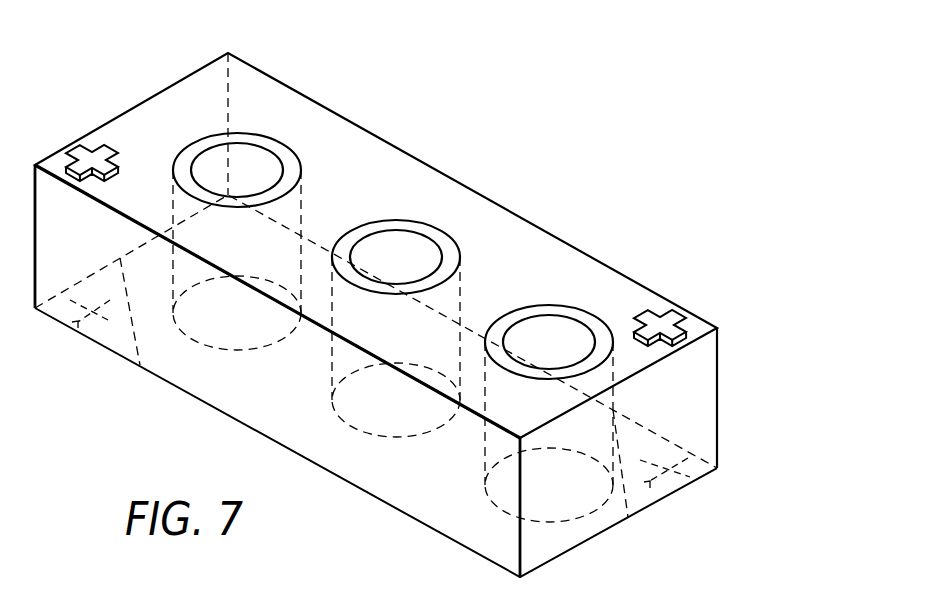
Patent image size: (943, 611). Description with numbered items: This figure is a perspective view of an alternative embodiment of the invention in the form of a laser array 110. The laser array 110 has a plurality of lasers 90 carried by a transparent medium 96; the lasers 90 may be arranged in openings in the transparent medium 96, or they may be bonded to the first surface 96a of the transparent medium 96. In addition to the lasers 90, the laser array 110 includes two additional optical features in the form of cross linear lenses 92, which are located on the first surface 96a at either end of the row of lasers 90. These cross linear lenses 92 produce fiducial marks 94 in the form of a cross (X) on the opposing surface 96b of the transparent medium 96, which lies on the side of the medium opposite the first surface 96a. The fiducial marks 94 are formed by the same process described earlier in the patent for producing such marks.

The laser array 110 is at (421, 294).
The lasers 90 is at (263, 143).
The cross linear lens 92 is at (90, 157).
The fiducial marks 94 is at (80, 322).
The transparent medium 96 is at (424, 315).
The first surface 96a is at (600, 283).
The opposing surface 96b is at (697, 483).